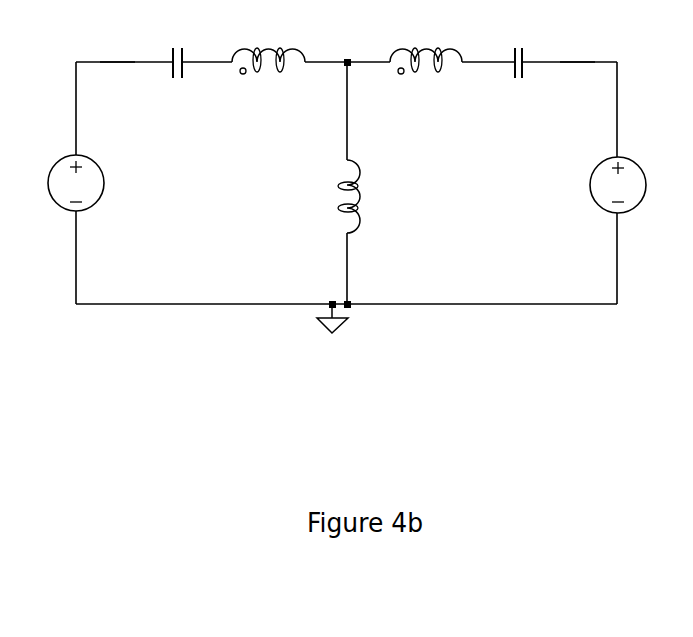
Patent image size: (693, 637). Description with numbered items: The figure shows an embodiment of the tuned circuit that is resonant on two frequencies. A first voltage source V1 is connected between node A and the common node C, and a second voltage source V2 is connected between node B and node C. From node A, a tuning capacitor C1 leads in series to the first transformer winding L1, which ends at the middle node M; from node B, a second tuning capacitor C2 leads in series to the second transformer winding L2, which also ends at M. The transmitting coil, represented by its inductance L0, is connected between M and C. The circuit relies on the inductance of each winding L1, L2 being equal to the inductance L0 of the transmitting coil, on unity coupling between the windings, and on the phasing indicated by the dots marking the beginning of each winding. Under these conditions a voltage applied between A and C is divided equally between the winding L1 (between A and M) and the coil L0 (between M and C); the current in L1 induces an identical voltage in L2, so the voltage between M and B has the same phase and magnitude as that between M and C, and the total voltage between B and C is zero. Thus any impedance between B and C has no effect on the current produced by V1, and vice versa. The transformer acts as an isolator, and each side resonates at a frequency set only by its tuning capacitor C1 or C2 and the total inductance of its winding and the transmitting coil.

The node A is at (117, 56).
The node B is at (577, 56).
The node M is at (348, 56).
The node C is at (334, 309).
The tuning capacitor C1 is at (177, 54).
The tuning capacitor C2 is at (518, 54).
The transformer winding L1 is at (268, 52).
The transformer winding L2 is at (426, 52).
The transmitting coil inductance L0 is at (363, 196).
The voltage source V1 is at (86, 174).
The voltage source V2 is at (627, 177).